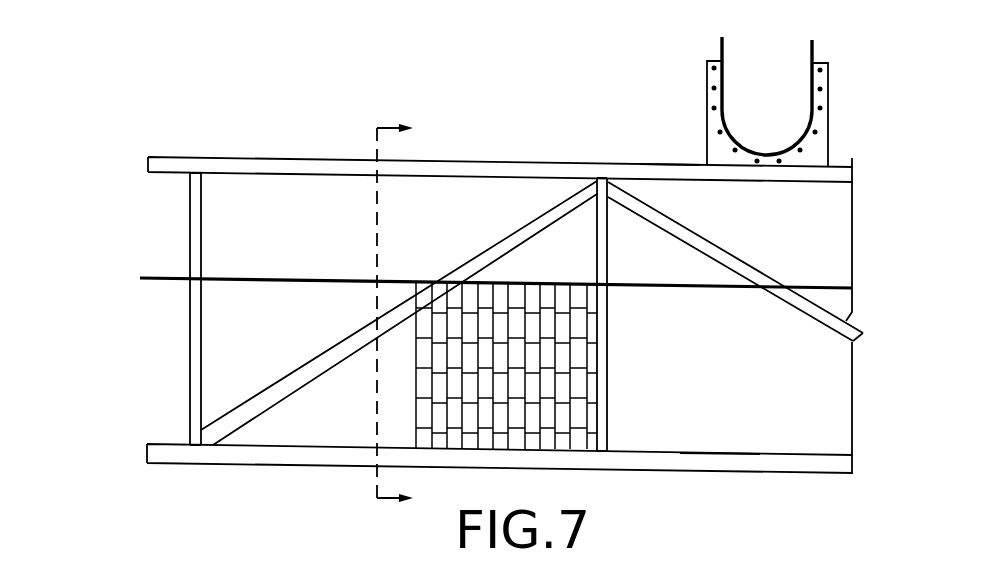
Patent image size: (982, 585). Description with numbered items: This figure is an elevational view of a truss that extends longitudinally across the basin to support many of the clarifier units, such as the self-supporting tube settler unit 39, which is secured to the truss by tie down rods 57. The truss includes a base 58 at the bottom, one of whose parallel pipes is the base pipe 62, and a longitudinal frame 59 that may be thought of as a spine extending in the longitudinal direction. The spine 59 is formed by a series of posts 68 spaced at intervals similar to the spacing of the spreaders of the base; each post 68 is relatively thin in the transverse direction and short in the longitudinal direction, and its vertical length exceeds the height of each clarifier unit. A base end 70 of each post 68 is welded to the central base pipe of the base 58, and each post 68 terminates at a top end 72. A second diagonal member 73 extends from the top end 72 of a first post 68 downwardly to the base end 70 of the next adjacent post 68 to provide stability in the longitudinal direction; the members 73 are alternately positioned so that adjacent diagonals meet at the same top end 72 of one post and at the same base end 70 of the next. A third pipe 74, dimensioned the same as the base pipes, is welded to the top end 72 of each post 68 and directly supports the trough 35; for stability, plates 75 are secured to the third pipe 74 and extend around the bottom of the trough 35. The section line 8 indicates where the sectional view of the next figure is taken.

The section line 8- 8 is at (408, 316).
The trough 35 is at (720, 97).
The self-supporting tube settler unit 39 is at (556, 358).
The tie down rods 57 is at (173, 282).
The base 58 is at (269, 478).
The longitudinal frame 59 is at (673, 150).
The base pipe 62 is at (707, 453).
The post 68 is at (202, 243).
The base end 70 is at (192, 437).
The top end 72 is at (192, 180).
The second diagonal member 73 is at (525, 225).
The third pipe 74 is at (310, 157).
The plates 75 is at (817, 155).